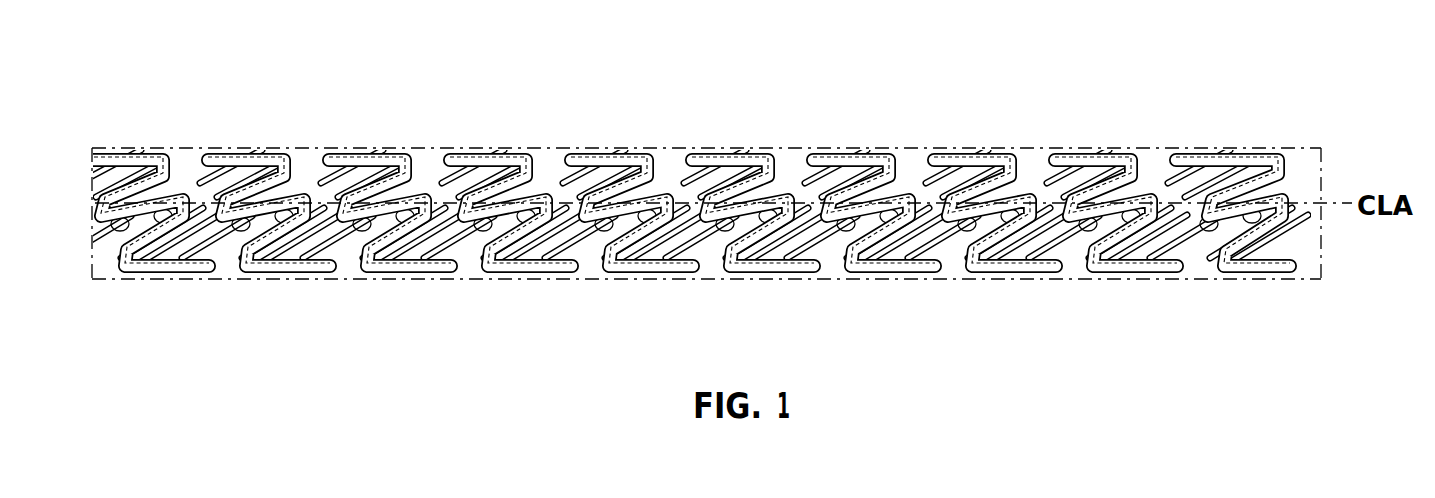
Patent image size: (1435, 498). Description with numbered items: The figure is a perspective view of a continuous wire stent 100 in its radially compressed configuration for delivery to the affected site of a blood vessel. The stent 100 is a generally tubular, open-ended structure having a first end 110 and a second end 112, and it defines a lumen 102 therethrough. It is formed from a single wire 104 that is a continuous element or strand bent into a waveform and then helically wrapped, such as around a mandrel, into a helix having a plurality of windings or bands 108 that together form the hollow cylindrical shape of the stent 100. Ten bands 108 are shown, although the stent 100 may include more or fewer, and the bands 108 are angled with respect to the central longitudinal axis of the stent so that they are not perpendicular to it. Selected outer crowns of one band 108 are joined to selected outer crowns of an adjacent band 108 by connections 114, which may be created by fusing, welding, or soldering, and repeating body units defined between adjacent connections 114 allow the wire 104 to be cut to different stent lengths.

The stent 100 is at (263, 124).
The lumen 102 is at (1283, 276).
The wire 104 is at (843, 160).
The bands 108 is at (722, 288).
The first end 110 is at (77, 146).
The second end 112 is at (1290, 158).
The connections 114 is at (1196, 176).